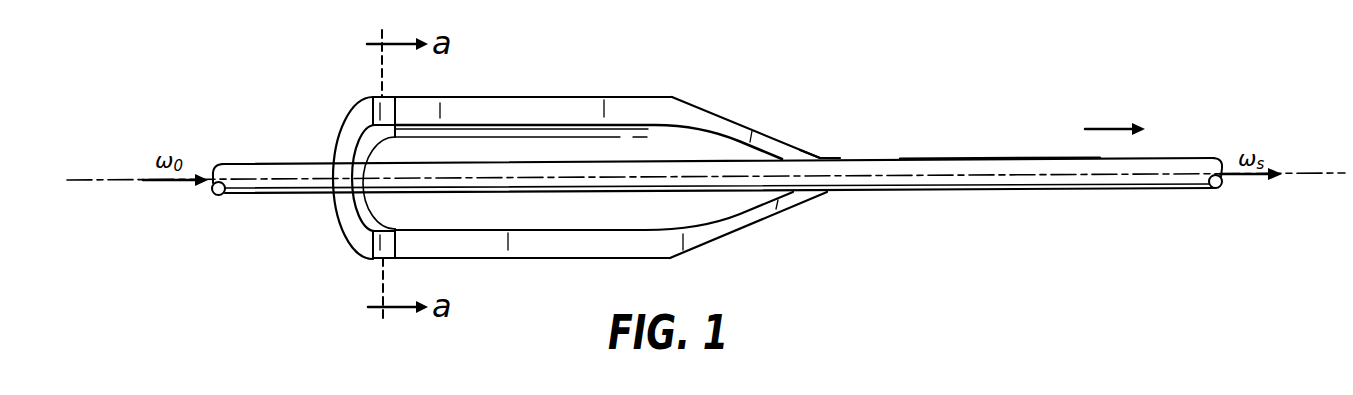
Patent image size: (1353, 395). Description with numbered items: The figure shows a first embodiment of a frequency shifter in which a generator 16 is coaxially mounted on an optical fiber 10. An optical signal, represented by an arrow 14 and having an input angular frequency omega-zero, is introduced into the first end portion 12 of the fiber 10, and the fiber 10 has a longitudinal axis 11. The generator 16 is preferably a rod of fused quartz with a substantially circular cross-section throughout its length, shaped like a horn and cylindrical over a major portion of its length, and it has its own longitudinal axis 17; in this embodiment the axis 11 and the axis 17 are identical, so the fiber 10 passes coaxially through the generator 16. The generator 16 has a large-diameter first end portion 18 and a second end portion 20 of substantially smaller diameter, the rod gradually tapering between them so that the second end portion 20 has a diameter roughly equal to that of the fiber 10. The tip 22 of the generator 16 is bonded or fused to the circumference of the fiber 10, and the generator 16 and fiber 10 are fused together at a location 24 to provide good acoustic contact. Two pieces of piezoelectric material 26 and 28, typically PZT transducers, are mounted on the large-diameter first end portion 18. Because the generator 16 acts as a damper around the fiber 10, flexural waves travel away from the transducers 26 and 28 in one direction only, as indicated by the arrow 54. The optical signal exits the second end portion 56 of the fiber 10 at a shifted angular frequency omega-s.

The optical fiber 10 is at (270, 165).
The longitudinal axis 11 is at (80, 180).
The first end portion 12 is at (212, 174).
The optical signal arrow 14 is at (160, 183).
The generator 16 is at (549, 84).
The longitudinal axis 17 is at (992, 157).
The first end portion 18 is at (346, 118).
The second end portion 20 is at (768, 135).
The tip 22 is at (827, 157).
The fused location 24 is at (827, 193).
The piezoelectric transducer 26 is at (387, 105).
The piezoelectric transducer 28 is at (372, 260).
The propagation direction arrow 54 is at (1113, 128).
The second end portion 56 is at (1222, 162).